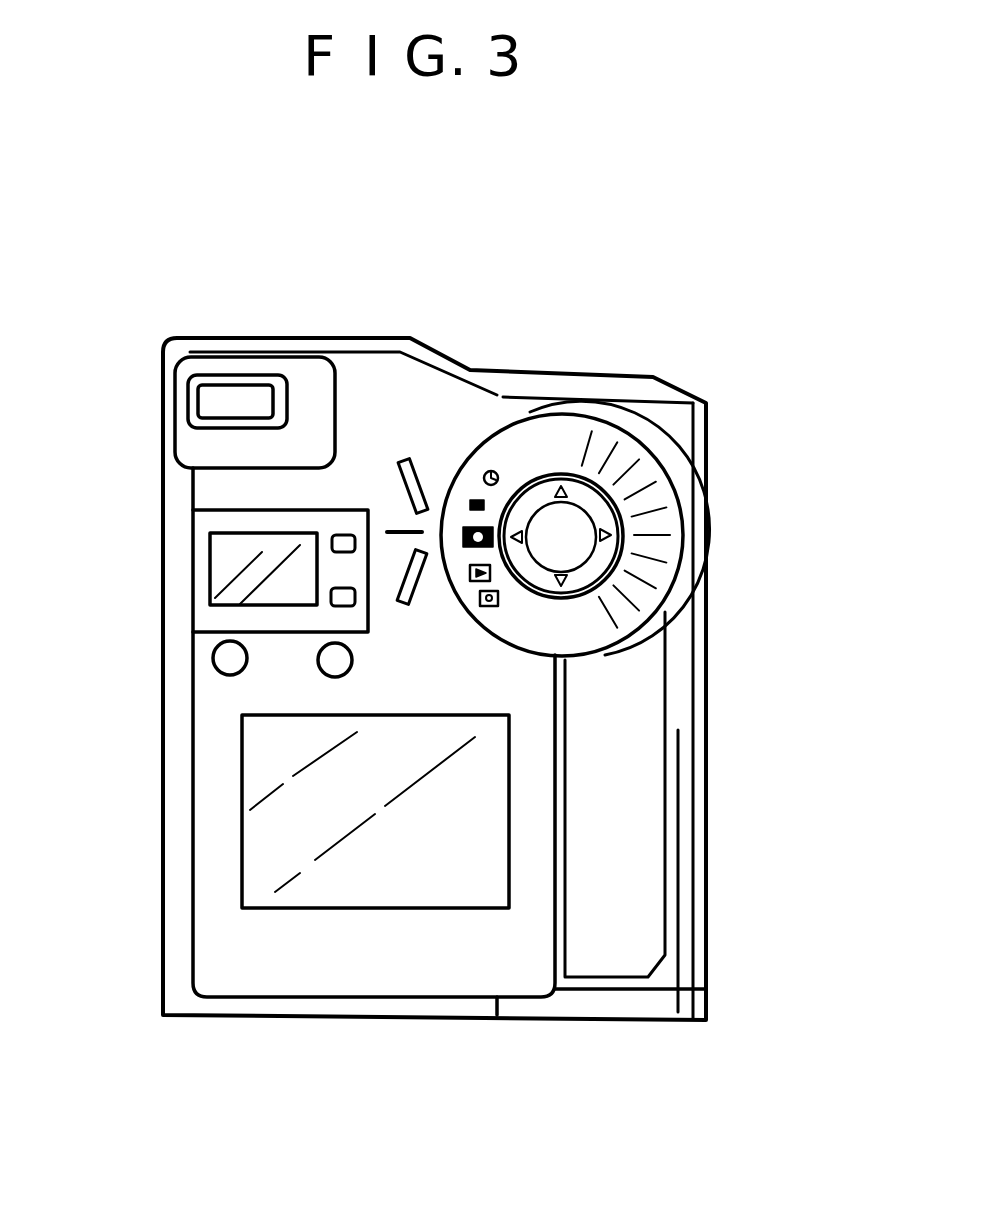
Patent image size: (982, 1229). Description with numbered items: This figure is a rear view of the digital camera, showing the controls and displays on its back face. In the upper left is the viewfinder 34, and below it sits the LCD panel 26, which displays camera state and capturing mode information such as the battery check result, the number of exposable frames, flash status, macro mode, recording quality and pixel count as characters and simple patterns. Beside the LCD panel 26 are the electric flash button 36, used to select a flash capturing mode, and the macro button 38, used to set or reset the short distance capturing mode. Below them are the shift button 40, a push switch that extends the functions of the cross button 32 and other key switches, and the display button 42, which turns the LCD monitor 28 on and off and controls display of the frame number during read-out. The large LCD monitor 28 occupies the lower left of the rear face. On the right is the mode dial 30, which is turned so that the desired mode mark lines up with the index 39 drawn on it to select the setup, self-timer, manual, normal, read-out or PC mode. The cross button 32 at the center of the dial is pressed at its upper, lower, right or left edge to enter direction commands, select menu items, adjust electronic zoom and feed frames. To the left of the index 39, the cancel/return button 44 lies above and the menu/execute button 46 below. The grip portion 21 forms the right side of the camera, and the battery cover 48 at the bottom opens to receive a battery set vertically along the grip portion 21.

The grip portion 21 is at (640, 843).
The LCD panel 26 is at (215, 553).
The LCD monitor 28 is at (340, 893).
The mode dial 30 is at (518, 440).
The cross button 32 is at (583, 521).
The viewfinder 34 is at (228, 383).
The electric flash button 36 is at (337, 535).
The macro button 38 is at (330, 597).
The index 39 is at (393, 528).
The shift button 40 is at (212, 657).
The display button 42 is at (352, 660).
The cancel/return button 44 is at (433, 458).
The menu/execute button 46 is at (418, 600).
The battery cover 48 is at (652, 998).